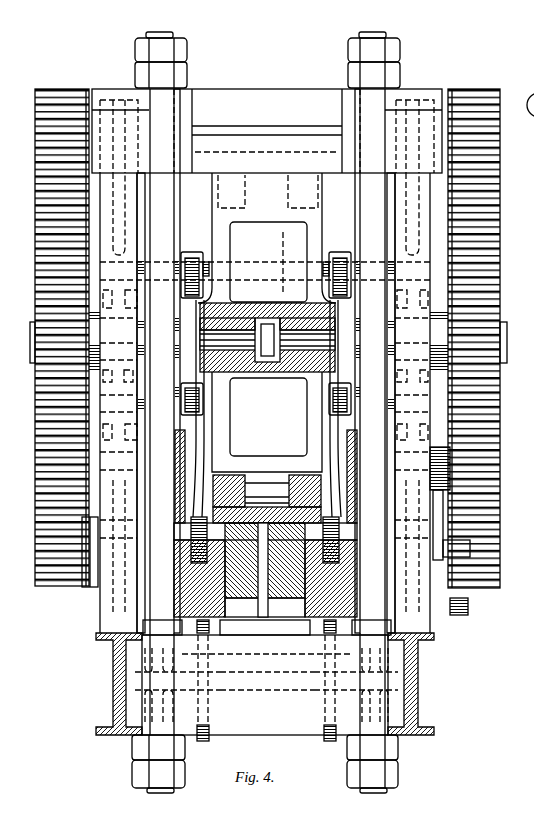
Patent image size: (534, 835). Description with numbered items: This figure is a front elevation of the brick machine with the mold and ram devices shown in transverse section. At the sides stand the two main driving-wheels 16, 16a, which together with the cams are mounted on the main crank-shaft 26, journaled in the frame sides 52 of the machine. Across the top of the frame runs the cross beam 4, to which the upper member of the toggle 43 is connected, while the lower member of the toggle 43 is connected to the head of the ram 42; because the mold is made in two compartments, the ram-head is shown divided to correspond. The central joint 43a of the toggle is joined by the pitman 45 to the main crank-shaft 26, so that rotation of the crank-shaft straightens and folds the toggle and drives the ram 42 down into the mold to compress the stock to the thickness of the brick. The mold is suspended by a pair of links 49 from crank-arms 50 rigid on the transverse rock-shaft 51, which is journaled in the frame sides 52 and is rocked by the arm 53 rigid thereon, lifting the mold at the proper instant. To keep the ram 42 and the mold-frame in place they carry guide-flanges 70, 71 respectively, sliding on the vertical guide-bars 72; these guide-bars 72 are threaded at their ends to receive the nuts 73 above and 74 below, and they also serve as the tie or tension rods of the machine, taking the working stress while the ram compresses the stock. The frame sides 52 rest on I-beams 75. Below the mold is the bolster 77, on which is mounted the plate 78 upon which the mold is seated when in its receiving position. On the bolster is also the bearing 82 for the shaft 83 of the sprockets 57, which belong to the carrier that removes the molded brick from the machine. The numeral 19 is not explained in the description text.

The cross beam 4 is at (267, 122).
The main driving-wheel 16 is at (52, 337).
The main driving-wheel 16a is at (479, 338).
The tie rod 19 is at (160, 401).
The main crank-shaft 26 is at (507, 342).
The ram 42 is at (267, 447).
The toggle 43 is at (312, 228).
The central joint of the toggle 43a is at (244, 316).
The pitman 45 is at (335, 310).
The links 49 is at (200, 372).
The crank-arms 50 is at (185, 258).
The transverse shaft 51 is at (371, 265).
The frame sides 52 is at (125, 212).
The arm 53 is at (268, 262).
The sprockets 57 is at (322, 736).
The guide-flanges 70 is at (176, 492).
The guide-flanges 71 is at (175, 562).
The guide-bars 72 is at (155, 577).
The nuts 73 is at (191, 53).
The nuts 74 is at (260, 764).
The I-beams 75 is at (113, 685).
The bolster 77 is at (265, 685).
The plate 78 is at (245, 626).
The bearing 82 is at (157, 695).
The shaft 83 is at (266, 680).